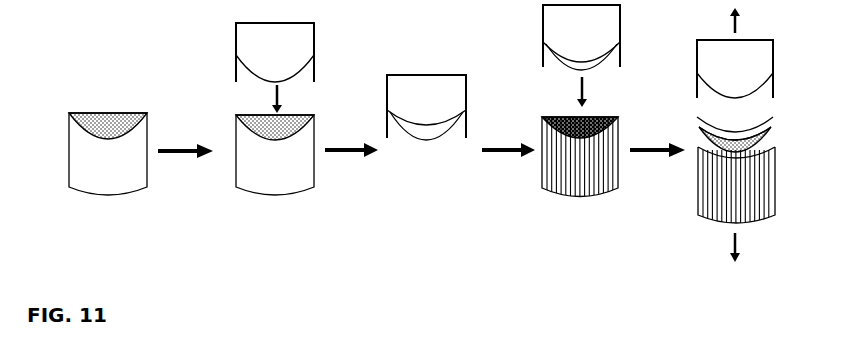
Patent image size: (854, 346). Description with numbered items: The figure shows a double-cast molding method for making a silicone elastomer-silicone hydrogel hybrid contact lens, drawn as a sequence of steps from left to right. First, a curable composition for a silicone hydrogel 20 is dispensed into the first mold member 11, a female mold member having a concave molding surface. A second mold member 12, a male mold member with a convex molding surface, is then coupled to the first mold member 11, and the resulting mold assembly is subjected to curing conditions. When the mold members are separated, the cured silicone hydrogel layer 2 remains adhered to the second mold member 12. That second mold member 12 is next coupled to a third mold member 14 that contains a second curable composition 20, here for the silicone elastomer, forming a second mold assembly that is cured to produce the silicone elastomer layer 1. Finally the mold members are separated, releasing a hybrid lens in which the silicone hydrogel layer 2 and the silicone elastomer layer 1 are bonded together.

The silicone elastomer layer 1 is at (762, 131).
The silicone hydrogel layer 2 is at (594, 148).
The first mold member 11 is at (126, 171).
The second mold member 12 is at (303, 52).
The third mold member 14 is at (658, 177).
The curable composition 20 is at (367, 113).